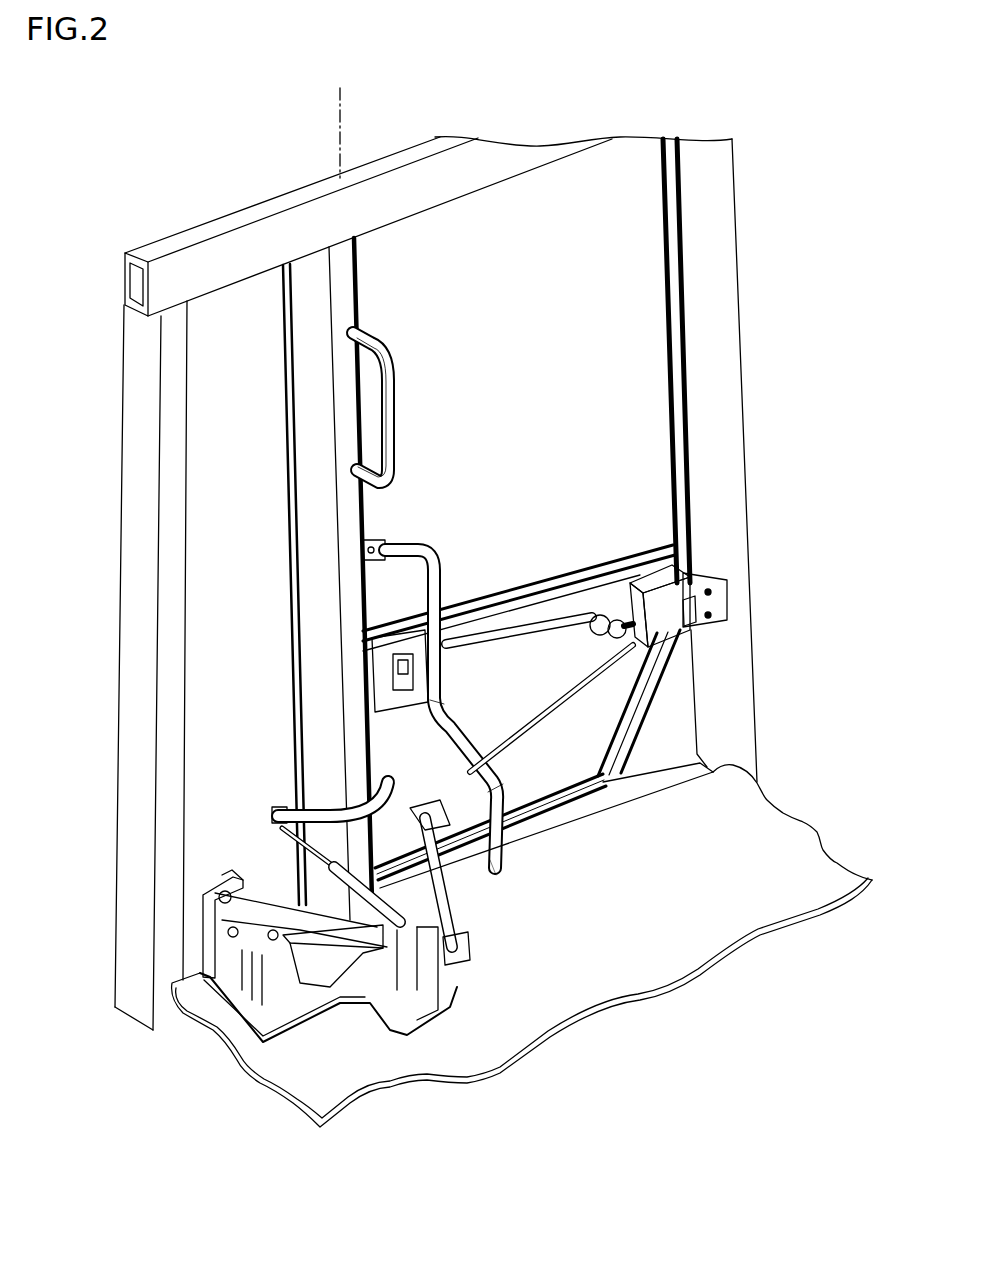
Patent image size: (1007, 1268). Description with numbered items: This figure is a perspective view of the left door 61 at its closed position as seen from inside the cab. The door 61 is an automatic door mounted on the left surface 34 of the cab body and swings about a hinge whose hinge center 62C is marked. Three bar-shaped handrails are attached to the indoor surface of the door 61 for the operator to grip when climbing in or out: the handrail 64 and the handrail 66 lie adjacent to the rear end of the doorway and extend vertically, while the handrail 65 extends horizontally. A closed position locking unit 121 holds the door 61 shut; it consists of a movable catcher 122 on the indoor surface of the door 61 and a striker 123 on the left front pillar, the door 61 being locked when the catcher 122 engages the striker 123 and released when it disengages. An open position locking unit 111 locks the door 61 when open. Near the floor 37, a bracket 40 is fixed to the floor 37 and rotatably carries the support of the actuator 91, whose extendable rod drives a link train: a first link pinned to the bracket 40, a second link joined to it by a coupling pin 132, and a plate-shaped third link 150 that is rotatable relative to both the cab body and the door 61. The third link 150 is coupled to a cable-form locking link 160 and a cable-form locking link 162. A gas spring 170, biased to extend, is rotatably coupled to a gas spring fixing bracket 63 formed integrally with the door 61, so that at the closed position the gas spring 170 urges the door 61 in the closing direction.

The left surface 34 is at (230, 345).
The hinge center 62C is at (339, 118).
The handrail 66 is at (385, 410).
The left door 61 is at (578, 352).
The handrail 64 is at (437, 557).
The handrail 65 is at (560, 613).
The closed position locking unit 121 is at (690, 572).
The catcher 122 is at (662, 632).
The striker 123 is at (697, 623).
The open position locking unit 111 is at (400, 667).
The gas spring fixing bracket 63 is at (288, 812).
The gas spring 170 is at (285, 840).
The bracket 40 is at (225, 973).
The actuator 91 is at (328, 942).
The coupling pin 132 is at (463, 963).
The third link 150 is at (467, 776).
The locking link 162 is at (490, 792).
The locking link 160 is at (543, 727).
The floor 37 is at (693, 910).